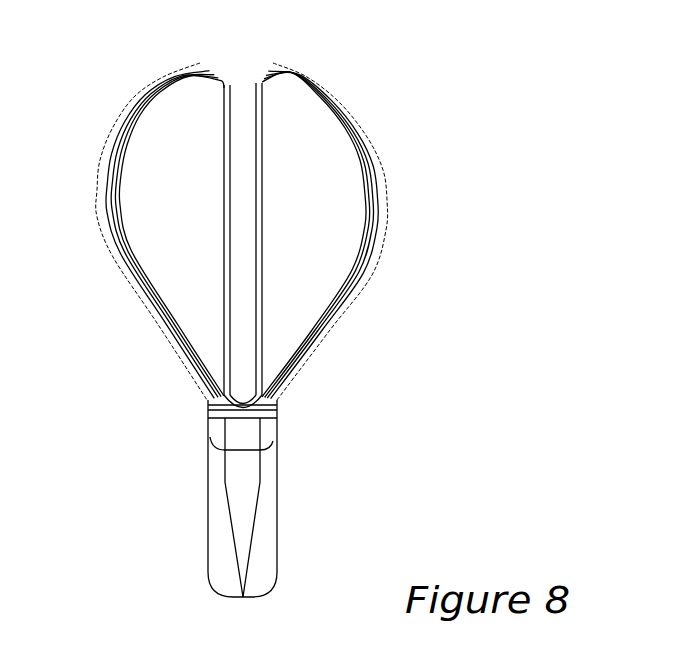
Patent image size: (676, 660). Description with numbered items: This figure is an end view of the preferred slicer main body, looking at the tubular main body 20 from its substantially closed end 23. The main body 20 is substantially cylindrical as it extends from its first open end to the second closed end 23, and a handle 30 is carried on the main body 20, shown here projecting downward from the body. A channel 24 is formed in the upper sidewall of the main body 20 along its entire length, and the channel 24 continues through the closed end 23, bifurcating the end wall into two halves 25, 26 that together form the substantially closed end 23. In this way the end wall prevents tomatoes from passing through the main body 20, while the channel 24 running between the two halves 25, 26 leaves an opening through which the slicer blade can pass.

The tubular main body 20 is at (120, 270).
The substantially closed end 23 is at (354, 299).
The channel 24 is at (242, 81).
The first half of closed end 25 is at (161, 206).
The second half of closed end 26 is at (286, 206).
The handle 30 is at (219, 532).